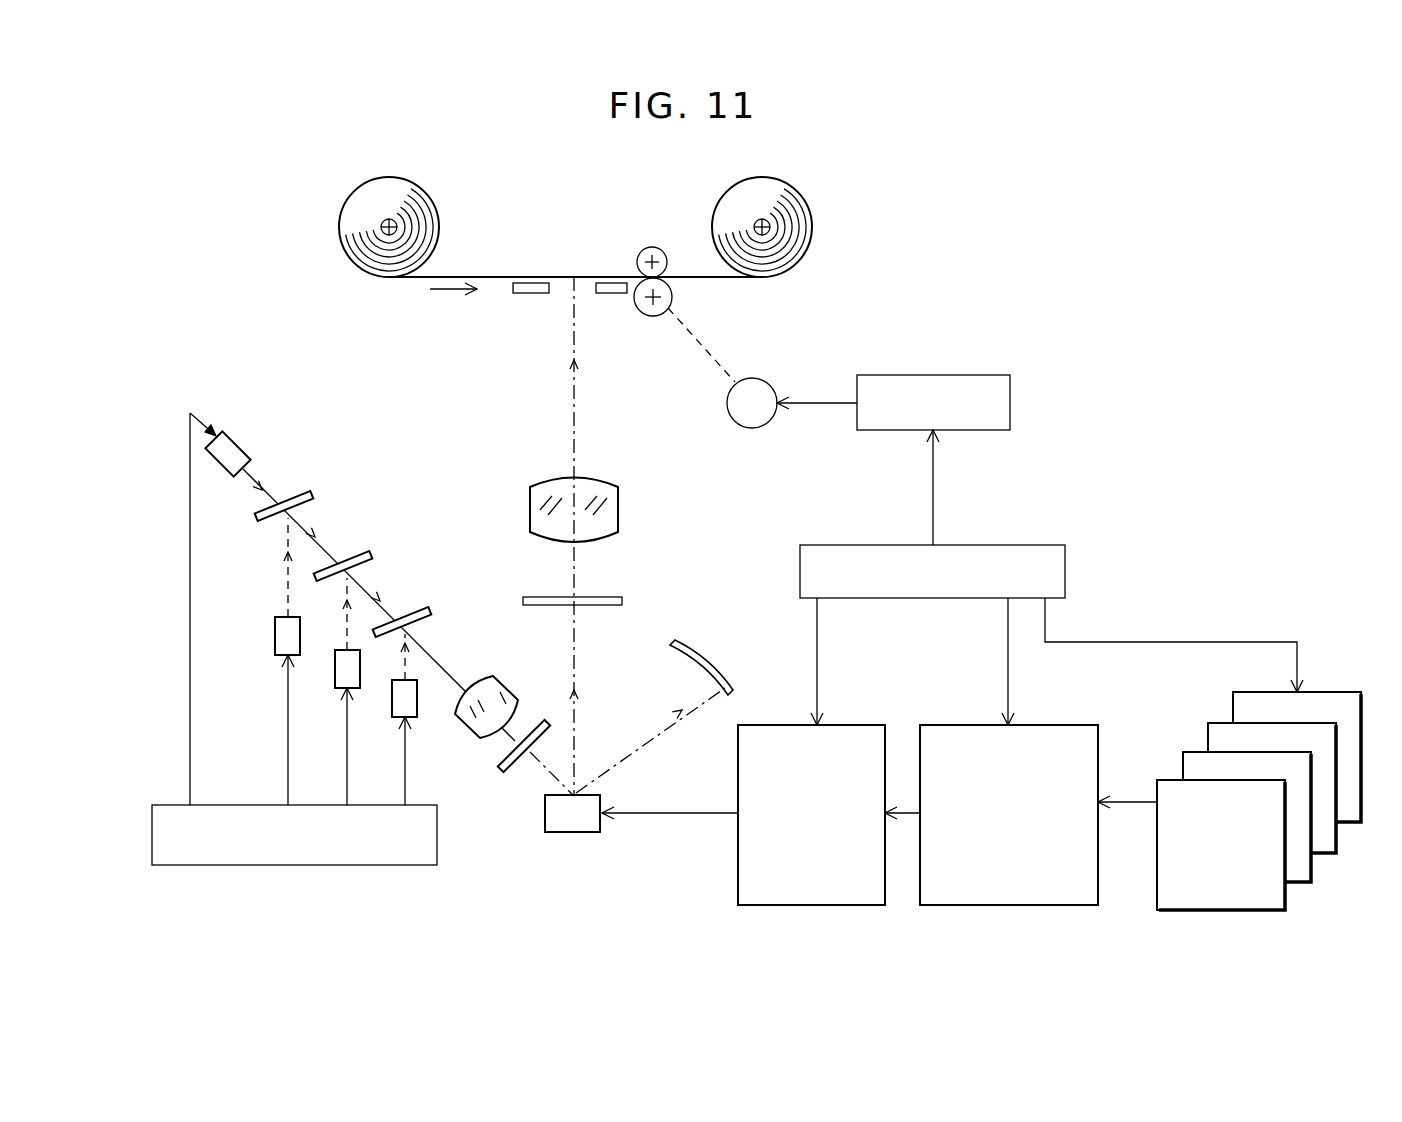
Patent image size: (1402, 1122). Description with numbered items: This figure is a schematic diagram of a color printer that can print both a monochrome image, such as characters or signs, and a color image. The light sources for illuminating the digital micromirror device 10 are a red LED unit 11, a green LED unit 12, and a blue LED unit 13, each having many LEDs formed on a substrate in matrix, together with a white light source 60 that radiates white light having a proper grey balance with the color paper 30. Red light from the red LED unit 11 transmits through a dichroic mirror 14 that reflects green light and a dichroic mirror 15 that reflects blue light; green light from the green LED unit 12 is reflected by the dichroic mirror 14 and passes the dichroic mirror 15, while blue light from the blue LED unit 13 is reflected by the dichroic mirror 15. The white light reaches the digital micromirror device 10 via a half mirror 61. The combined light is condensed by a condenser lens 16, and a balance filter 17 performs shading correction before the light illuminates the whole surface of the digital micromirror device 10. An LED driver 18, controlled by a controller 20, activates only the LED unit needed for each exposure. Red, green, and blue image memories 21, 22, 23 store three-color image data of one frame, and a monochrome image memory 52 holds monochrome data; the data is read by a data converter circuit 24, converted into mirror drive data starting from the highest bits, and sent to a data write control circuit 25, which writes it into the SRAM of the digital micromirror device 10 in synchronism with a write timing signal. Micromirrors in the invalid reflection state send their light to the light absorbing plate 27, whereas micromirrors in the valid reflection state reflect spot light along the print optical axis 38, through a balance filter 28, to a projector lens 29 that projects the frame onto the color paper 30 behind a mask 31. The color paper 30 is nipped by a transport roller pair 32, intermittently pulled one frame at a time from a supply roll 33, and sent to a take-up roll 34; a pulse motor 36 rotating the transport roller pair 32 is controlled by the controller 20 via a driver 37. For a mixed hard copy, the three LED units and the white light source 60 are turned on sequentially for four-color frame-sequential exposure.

The digital micromirror device 10 is at (572, 834).
The red LED unit 11 is at (230, 432).
The green LED unit 12 is at (280, 652).
The blue LED unit 13 is at (355, 686).
The dichroic mirror 14 is at (305, 490).
The dichroic mirror 15 is at (366, 552).
The condenser lens 16 is at (502, 680).
The balance filter 17 is at (515, 770).
The LED driver 18 is at (295, 867).
The controller 20 is at (1005, 545).
The red image memory 21 is at (1287, 903).
The green image memory 22 is at (1314, 877).
The blue image memory 23 is at (1216, 720).
The data converter circuit 24 is at (1058, 724).
The data write control circuit 25 is at (870, 724).
The light absorbing plate 27 is at (707, 654).
The balance filter 28 is at (612, 596).
The projector lens 29 is at (606, 480).
The color paper 30 is at (533, 281).
The mask 31 is at (535, 296).
The transport roller pair 32 is at (660, 316).
The supply roll 33 is at (427, 192).
The take-up roll 34 is at (800, 190).
The pulse motor 36 is at (760, 378).
The driver 37 is at (937, 375).
The print optical axis 38 is at (570, 413).
The monochrome image memory 52 is at (1337, 692).
The white light source 60 is at (418, 716).
The half mirror 61 is at (425, 608).